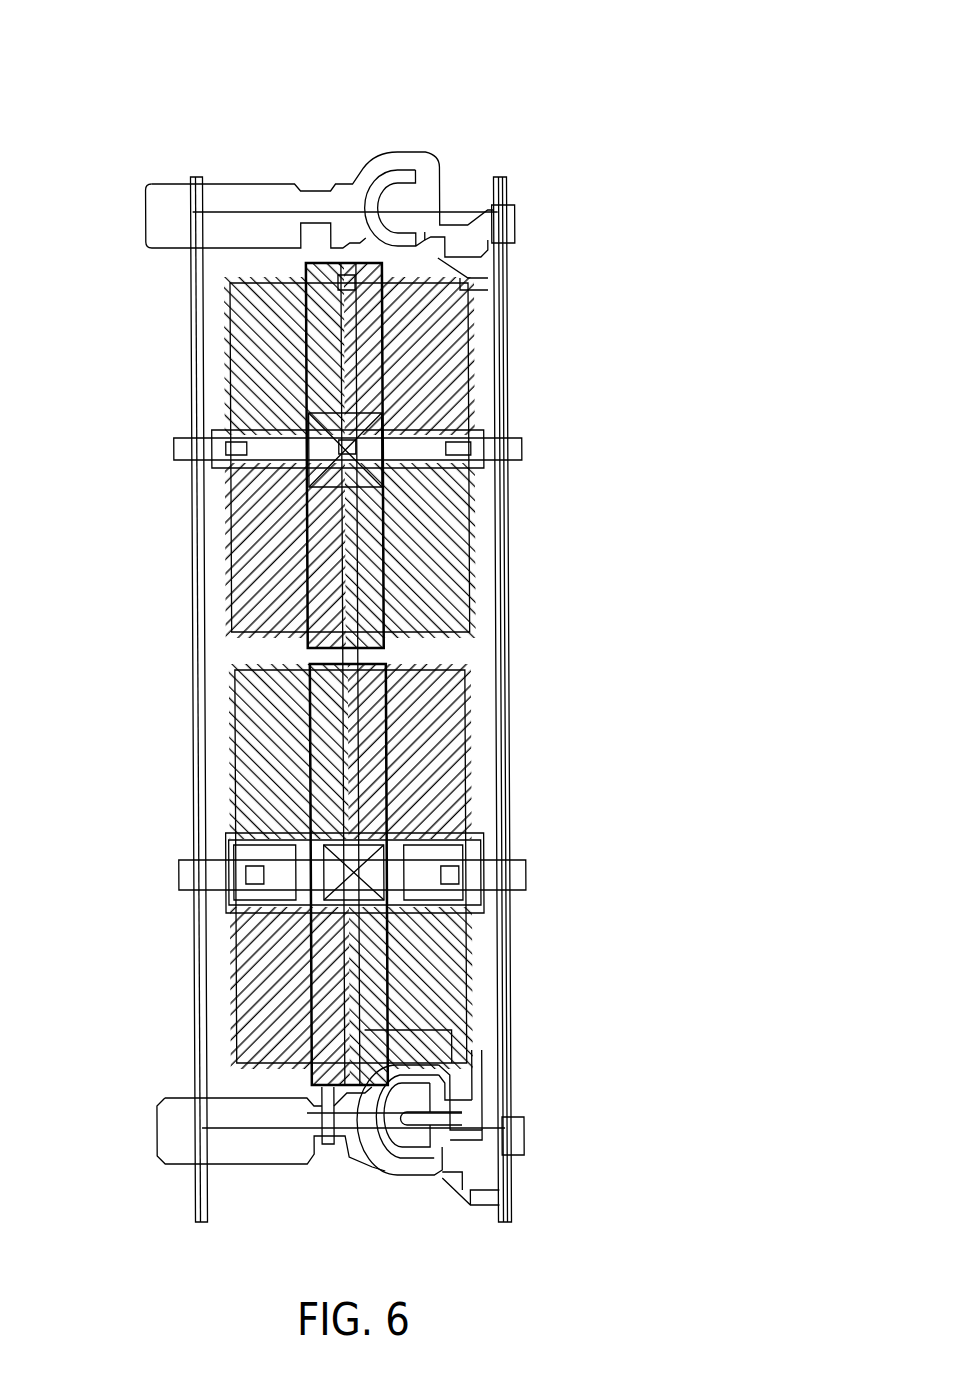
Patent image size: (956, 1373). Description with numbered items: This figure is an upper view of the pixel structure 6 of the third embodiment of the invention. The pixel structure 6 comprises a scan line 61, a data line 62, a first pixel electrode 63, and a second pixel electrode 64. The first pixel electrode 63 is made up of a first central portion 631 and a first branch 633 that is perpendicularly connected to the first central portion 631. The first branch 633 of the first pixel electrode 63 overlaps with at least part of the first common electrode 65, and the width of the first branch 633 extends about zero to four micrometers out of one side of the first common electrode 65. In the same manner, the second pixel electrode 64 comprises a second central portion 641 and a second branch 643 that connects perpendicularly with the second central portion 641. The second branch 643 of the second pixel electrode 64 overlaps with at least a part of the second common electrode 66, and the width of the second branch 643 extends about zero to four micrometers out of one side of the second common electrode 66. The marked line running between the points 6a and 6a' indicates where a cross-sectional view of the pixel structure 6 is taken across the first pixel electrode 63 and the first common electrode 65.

The pixel structure 6 is at (466, 102).
The scan line 61 is at (518, 1140).
The data line 62 is at (508, 588).
The first pixel electrode 63 is at (404, 420).
The first central portion 631 is at (385, 355).
The first branch 633 is at (440, 483).
The second pixel electrode 64 is at (404, 910).
The second central portion 641 is at (395, 770).
The second branch 643 is at (430, 925).
The first common electrode 65 is at (512, 447).
The second common electrode 66 is at (518, 872).
The section line end 6a is at (171, 420).
The section line end 6a' is at (170, 480).